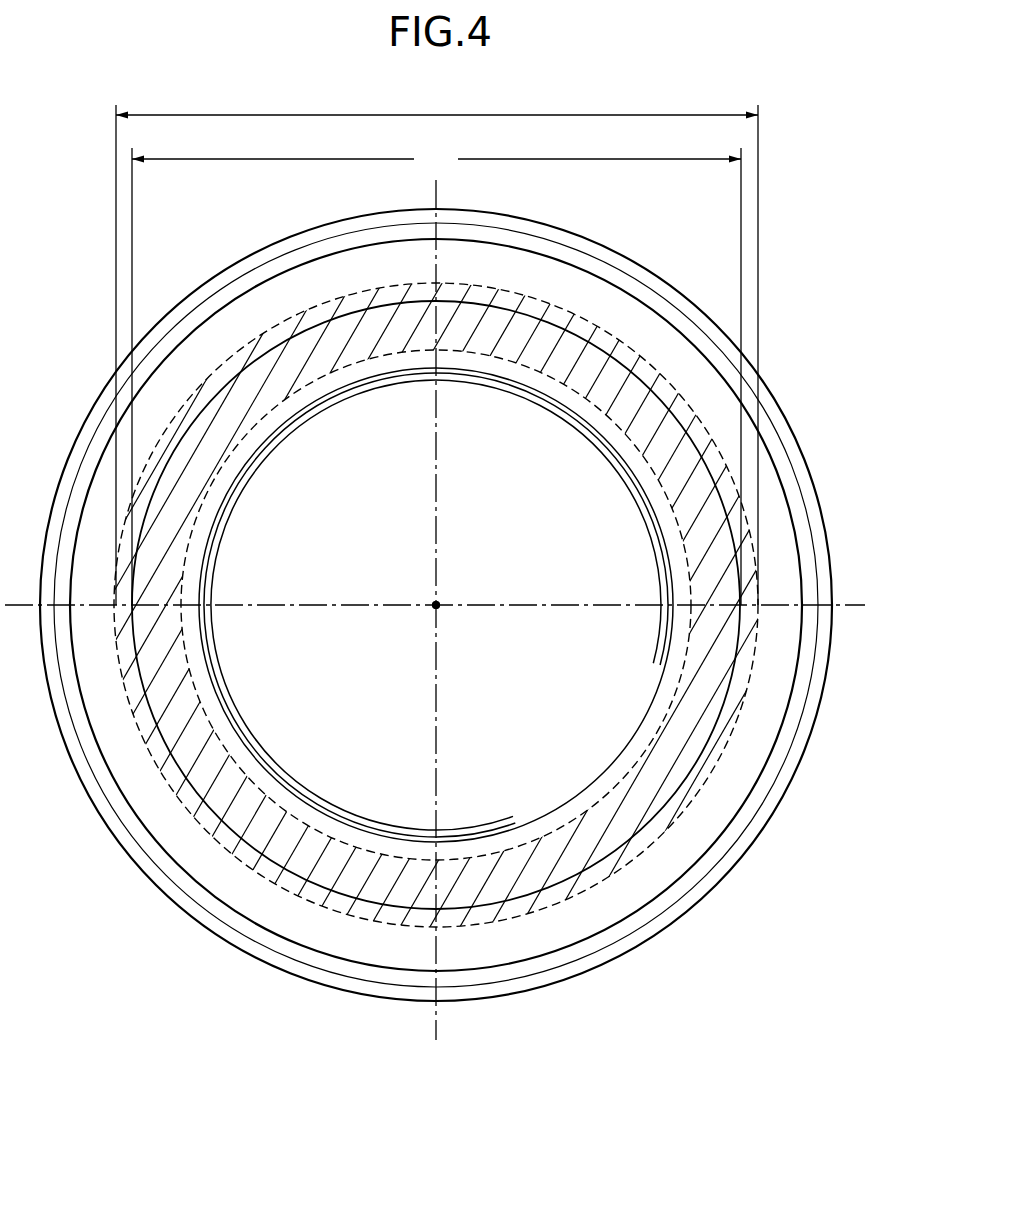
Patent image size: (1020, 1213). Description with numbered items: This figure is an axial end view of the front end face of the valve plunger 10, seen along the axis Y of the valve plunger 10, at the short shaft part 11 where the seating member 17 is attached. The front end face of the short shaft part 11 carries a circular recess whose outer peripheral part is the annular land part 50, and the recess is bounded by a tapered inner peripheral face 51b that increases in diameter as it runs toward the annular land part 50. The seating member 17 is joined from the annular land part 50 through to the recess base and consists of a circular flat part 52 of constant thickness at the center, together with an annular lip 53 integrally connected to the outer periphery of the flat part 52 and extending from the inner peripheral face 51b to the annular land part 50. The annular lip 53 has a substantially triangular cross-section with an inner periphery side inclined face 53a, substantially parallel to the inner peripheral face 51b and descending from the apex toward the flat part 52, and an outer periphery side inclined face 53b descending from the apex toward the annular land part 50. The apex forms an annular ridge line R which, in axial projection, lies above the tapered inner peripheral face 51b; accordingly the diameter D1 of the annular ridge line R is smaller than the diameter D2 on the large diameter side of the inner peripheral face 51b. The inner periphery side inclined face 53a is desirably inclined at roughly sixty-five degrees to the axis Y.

The valve plunger 10 is at (173, 307).
The short shaft part 11 is at (238, 265).
The seating member 17 is at (592, 272).
The annular land part 50 is at (97, 457).
The flat part 52 is at (491, 562).
The annular lip 53 is at (170, 765).
The inner periphery side inclined face 53a is at (593, 793).
The outer periphery side inclined face 53b is at (233, 890).
The inner peripheral face 51b is at (180, 647).
The annular ridge line R is at (147, 705).
The axis Y is at (432, 603).
The diameter of the annular ridge line D1 is at (436, 374).
The diameter on the large diameter side of the inner peripheral face D2 is at (437, 346).